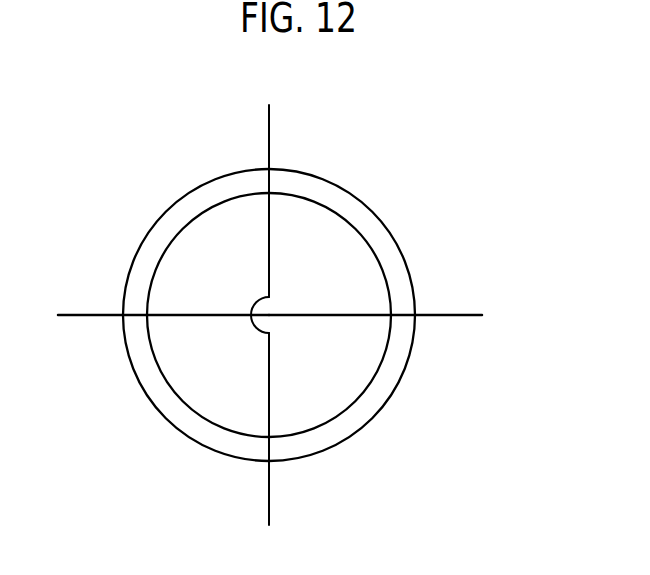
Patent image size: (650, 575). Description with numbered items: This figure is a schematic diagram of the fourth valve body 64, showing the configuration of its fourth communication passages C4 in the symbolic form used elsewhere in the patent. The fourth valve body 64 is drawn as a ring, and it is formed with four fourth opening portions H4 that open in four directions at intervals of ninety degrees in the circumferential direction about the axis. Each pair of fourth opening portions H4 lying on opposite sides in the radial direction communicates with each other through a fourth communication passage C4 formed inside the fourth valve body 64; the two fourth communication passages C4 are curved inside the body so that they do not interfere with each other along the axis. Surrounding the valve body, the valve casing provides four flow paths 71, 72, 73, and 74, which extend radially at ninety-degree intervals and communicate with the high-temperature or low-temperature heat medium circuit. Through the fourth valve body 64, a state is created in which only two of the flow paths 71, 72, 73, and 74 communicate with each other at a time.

The fourth valve body 64 is at (340, 255).
The flow path 71 is at (270, 121).
The flow path 72 is at (270, 511).
The flow path 73 is at (467, 317).
The flow path 74 is at (70, 317).
The fourth opening portion H4 is at (262, 192).
The fourth communication passage C4 is at (269, 267).